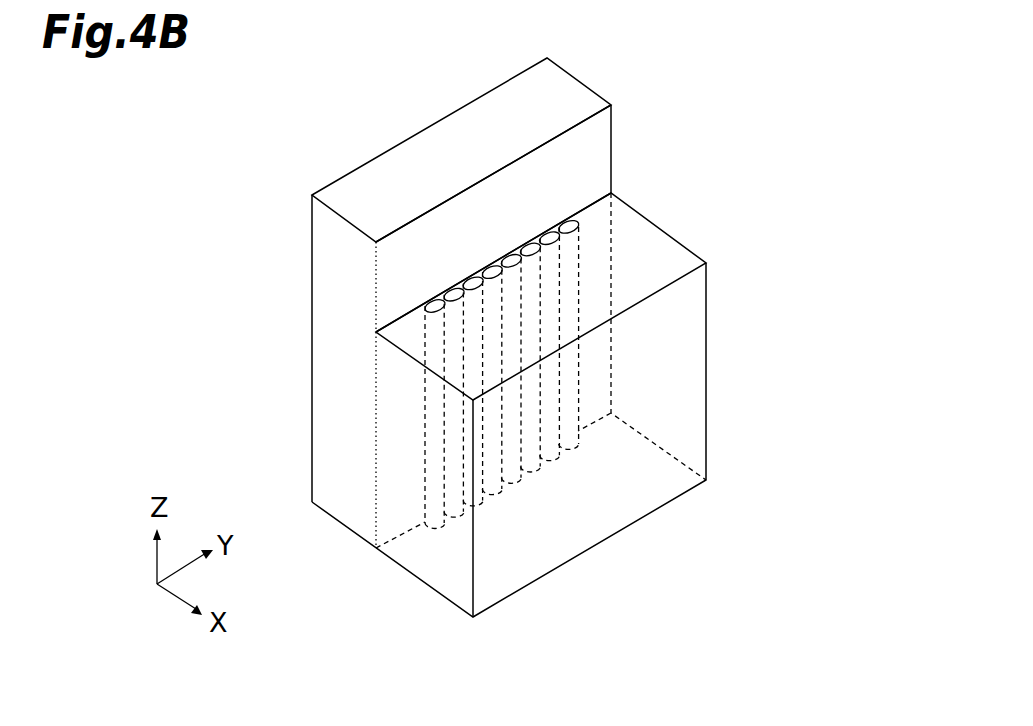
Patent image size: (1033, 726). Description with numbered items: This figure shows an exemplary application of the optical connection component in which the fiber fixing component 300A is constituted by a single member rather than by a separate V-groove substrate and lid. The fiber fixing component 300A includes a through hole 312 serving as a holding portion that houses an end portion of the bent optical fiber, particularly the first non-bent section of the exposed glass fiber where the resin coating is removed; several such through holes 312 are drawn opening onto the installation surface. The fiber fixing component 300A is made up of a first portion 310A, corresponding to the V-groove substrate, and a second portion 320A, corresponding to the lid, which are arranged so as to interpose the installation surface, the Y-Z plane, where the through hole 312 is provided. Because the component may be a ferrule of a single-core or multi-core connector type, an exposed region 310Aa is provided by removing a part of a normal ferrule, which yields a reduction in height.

The fiber fixing component 300A is at (556, 337).
The first portion 310A is at (328, 360).
The exposed region 310Aa is at (593, 147).
The through hole 312 is at (510, 257).
The second portion 320A is at (693, 428).